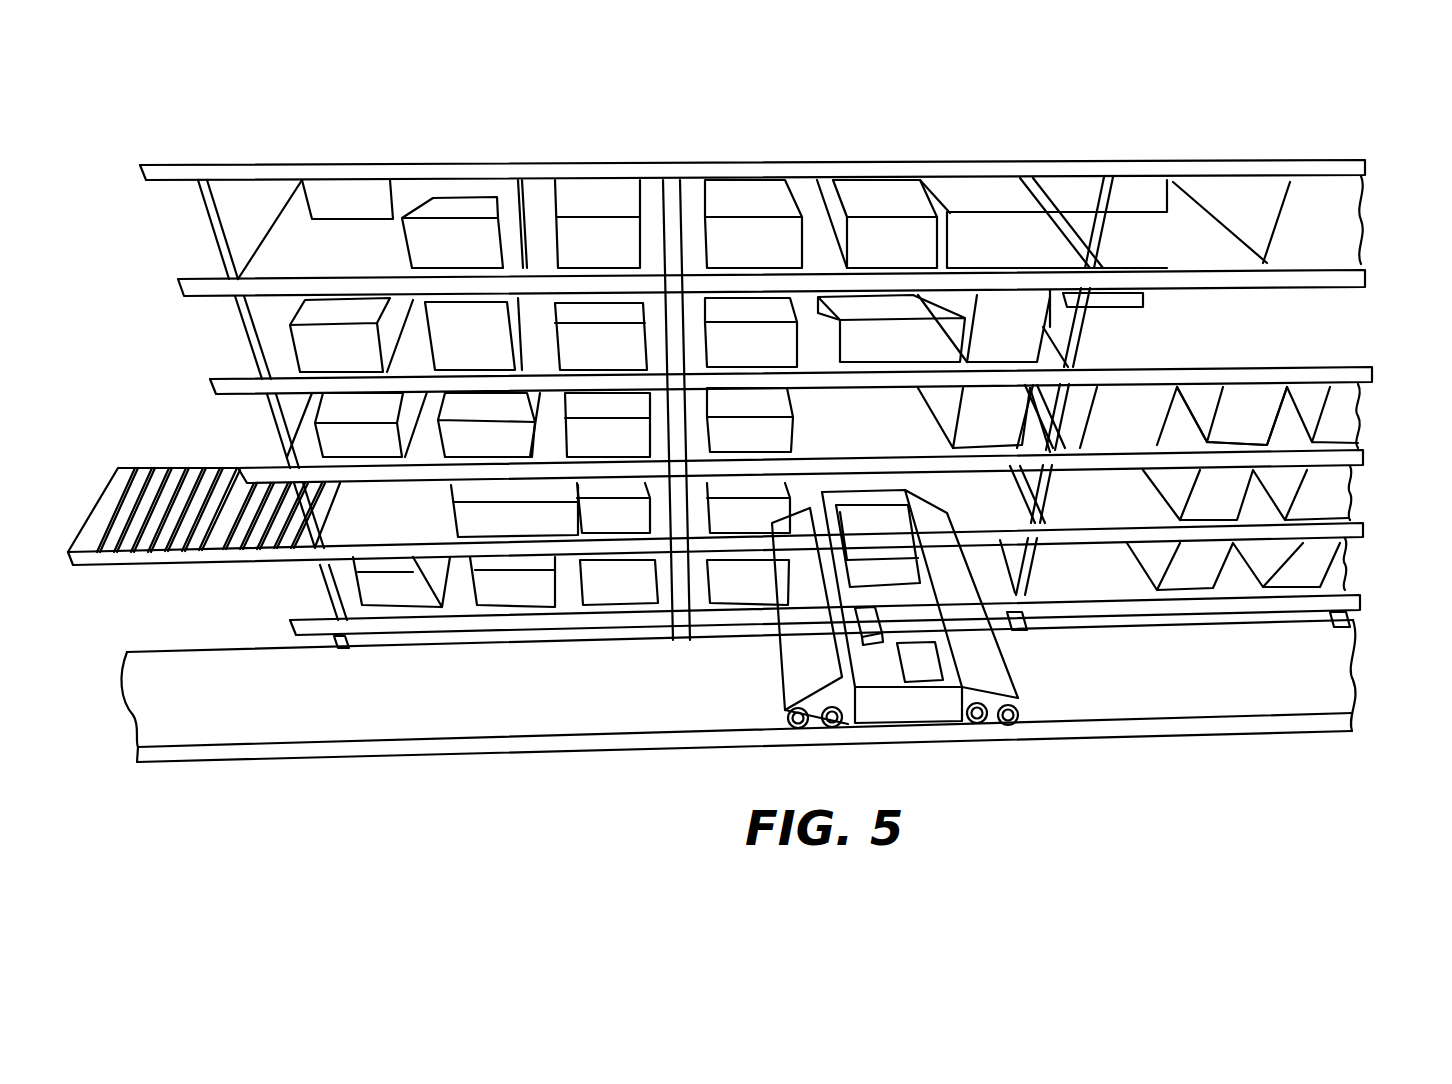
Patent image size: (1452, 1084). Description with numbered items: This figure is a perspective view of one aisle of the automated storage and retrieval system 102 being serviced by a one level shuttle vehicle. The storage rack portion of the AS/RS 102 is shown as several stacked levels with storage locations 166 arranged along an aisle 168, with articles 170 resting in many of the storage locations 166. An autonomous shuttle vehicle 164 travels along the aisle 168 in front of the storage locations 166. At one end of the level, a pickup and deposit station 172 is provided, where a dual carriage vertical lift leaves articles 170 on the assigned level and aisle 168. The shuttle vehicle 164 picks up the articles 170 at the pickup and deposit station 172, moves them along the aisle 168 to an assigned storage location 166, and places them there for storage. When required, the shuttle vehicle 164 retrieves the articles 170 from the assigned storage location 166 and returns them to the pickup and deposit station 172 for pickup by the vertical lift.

The automated storage and retrieval system 102 is at (497, 141).
The autonomous shuttle vehicle 164 is at (988, 672).
The storage location 166 is at (1013, 247).
The aisle 168 is at (540, 752).
The article 170 is at (470, 247).
The pickup and deposit station 172 is at (174, 497).